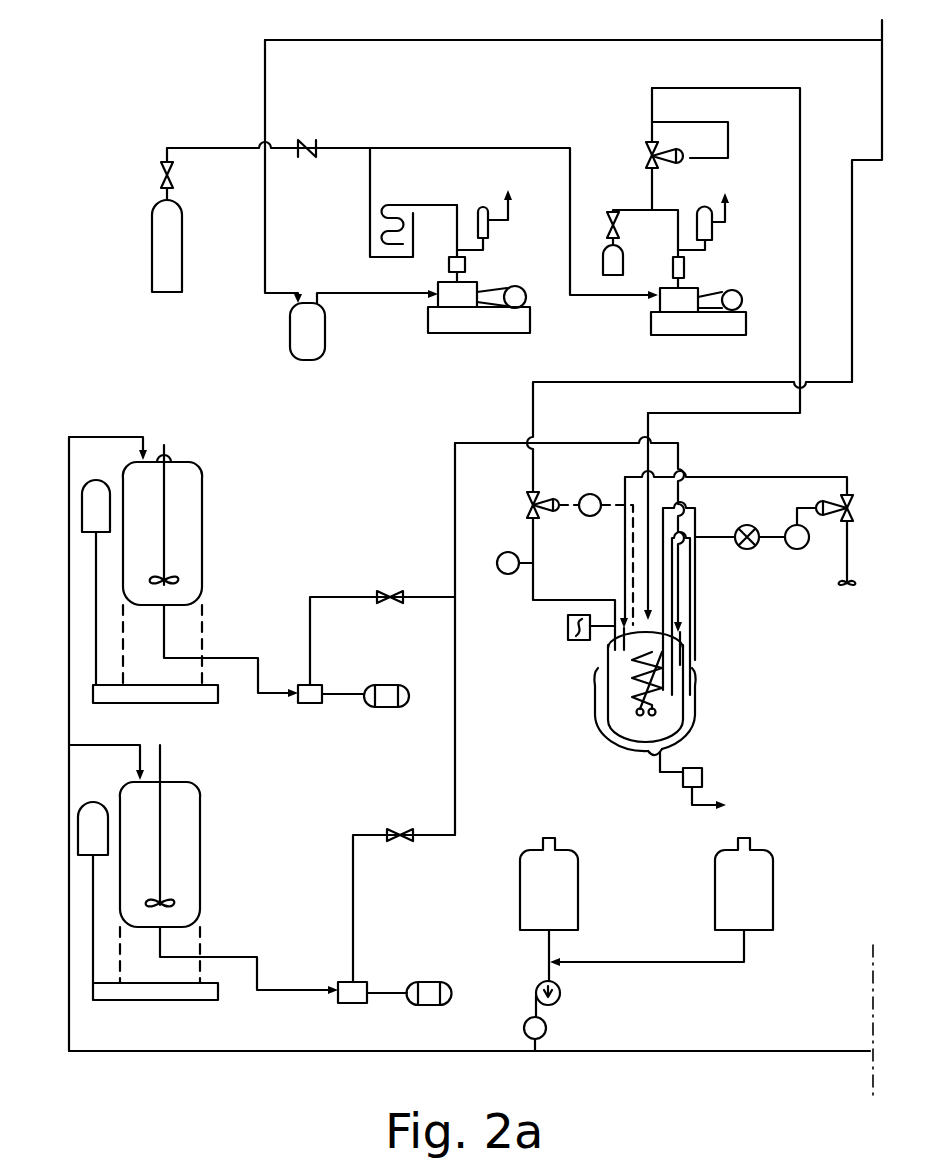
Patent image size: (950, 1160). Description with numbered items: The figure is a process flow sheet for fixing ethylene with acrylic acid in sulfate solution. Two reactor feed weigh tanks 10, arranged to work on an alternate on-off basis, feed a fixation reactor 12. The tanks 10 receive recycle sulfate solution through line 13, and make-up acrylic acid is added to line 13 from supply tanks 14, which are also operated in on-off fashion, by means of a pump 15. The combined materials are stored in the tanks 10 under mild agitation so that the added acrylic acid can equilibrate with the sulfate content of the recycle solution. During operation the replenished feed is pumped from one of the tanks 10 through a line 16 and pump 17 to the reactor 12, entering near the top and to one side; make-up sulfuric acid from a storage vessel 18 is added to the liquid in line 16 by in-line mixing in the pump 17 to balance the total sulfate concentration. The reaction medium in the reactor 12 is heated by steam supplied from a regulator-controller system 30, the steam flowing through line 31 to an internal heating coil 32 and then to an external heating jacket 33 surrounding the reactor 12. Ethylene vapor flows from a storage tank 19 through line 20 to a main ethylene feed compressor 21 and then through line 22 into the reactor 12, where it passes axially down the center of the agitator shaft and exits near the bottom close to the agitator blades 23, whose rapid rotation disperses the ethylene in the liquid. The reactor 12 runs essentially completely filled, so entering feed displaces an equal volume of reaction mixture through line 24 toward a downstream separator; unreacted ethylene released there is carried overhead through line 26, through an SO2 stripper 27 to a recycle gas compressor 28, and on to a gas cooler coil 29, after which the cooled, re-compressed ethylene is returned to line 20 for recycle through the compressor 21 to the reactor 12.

The reactor feed weigh tanks 10 is at (203, 486).
The fixation reactor 12 is at (697, 712).
The recycle sulfate solution line 13 is at (696, 1052).
The acrylic acid supply tanks 14 is at (566, 850).
The pump 15 is at (561, 998).
The feed line 16 is at (455, 464).
The pump 17 is at (300, 703).
The sulfuric acid storage vessel 18 is at (385, 707).
The ethylene storage tank 19 is at (152, 256).
The ethylene line 20 is at (215, 148).
The main ethylene feed compressor 21 is at (718, 335).
The ethylene feed line 22 is at (748, 88).
The agitator blades 23 is at (640, 716).
The reactor exit line 24 is at (618, 381).
The overhead ethylene line 26 is at (570, 40).
The SO2 stripper 27 is at (294, 358).
The recycle gas compressor 28 is at (468, 333).
The gas cooler coil 29 is at (362, 228).
The regulator-controller system 30 is at (800, 551).
The steam line 31 is at (728, 477).
The internal heating coil 32 is at (634, 681).
The external heating jacket 33 is at (694, 686).